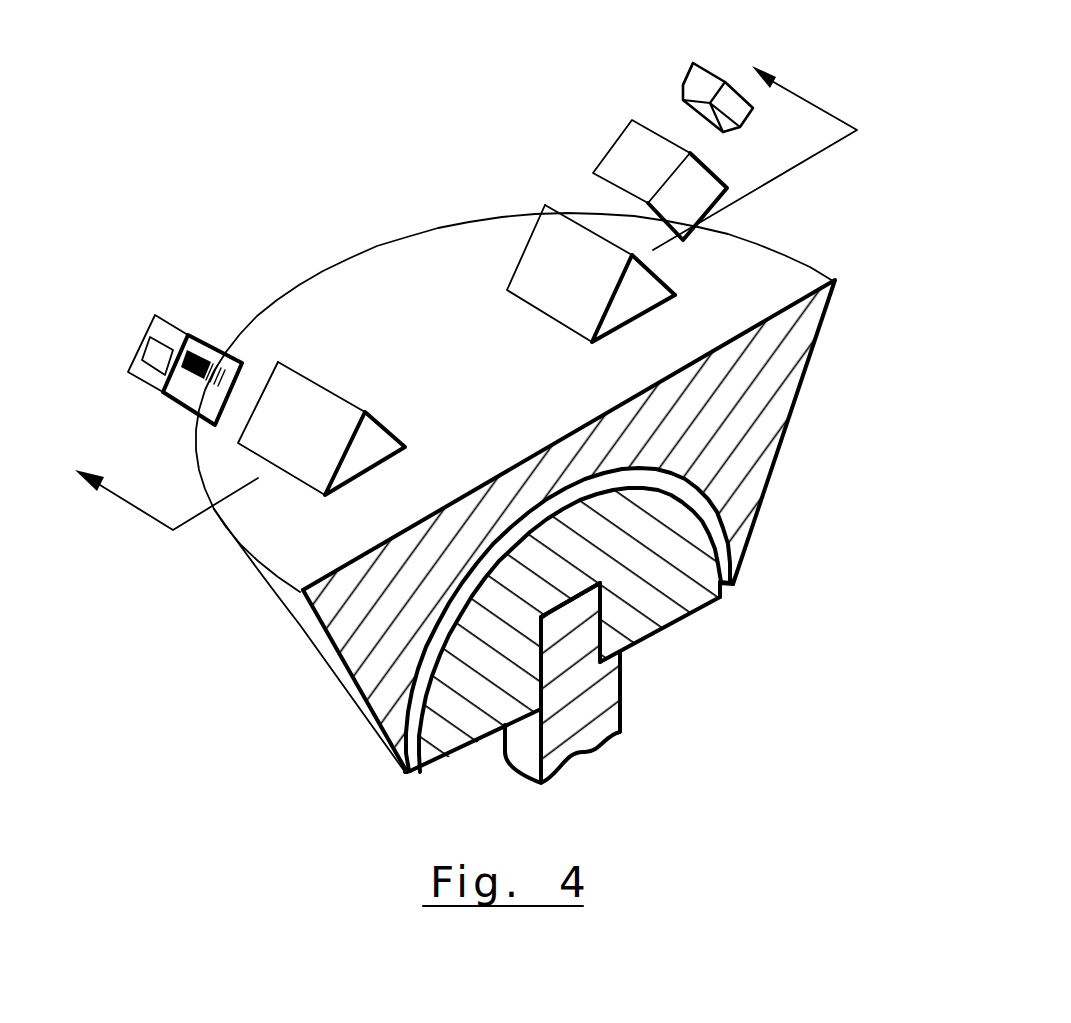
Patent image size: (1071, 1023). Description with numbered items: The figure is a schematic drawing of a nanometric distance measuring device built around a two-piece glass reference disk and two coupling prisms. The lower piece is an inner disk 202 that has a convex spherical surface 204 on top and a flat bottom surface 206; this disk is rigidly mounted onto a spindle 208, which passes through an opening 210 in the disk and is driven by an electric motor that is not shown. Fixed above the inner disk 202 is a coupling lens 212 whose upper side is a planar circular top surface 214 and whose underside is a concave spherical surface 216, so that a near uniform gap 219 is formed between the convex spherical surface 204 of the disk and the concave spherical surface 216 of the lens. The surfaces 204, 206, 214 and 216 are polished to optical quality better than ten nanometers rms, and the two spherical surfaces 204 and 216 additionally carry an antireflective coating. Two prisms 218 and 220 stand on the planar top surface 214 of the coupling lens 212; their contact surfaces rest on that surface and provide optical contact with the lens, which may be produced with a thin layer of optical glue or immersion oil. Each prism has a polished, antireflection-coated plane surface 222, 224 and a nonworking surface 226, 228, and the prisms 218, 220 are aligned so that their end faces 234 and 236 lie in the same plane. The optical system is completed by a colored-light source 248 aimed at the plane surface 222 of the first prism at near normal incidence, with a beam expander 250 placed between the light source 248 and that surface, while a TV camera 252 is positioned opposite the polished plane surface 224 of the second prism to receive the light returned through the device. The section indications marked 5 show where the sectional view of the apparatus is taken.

The inner disk 202 is at (680, 634).
The convex spherical surface 204 is at (728, 556).
The flat bottom surface 206 is at (688, 610).
The spindle 208 is at (577, 753).
The opening 210 is at (595, 648).
The coupling lens 212 is at (370, 665).
The planar circular top surface 214 is at (363, 285).
The concave spherical surface 216 is at (417, 767).
The prism 218 is at (347, 379).
The gap 219 is at (728, 590).
The prism 220 is at (581, 260).
The plane surface 222 is at (658, 272).
The plane surface 224 is at (287, 433).
The nonworking surface 226 is at (307, 373).
The nonworking surface 228 is at (557, 270).
The end face 234 is at (367, 443).
The end face 236 is at (635, 297).
The colored-light source 248 is at (698, 82).
The beam expander 250 is at (633, 160).
The TV camera 252 is at (152, 350).
The section line 5- 5 is at (452, 282).